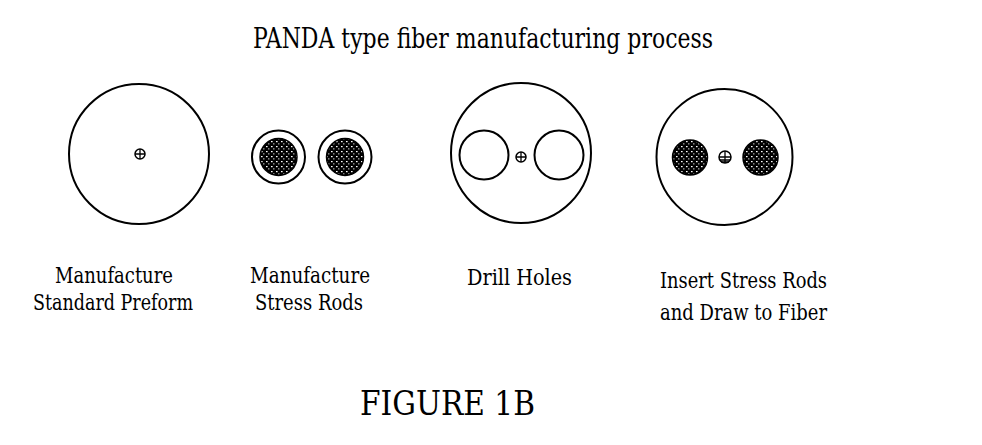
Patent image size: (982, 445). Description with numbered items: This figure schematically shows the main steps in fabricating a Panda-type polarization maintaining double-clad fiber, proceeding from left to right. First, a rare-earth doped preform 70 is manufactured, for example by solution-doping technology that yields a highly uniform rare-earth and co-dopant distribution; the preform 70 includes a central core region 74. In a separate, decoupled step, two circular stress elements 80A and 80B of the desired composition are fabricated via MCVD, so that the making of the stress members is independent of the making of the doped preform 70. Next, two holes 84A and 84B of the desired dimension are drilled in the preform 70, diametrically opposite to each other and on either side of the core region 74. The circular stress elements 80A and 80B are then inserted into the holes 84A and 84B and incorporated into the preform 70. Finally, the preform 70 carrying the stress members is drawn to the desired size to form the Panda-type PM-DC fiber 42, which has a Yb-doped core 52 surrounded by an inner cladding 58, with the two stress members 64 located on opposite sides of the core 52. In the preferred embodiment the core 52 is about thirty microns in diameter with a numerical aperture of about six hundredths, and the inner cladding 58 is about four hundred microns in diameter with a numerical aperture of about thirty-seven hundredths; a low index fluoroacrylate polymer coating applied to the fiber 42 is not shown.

The rare-earth doped preform 70 is at (97, 54).
The core region 74 is at (140, 141).
The circular stress element 80A is at (279, 131).
The circular stress element 80B is at (353, 131).
The hole 84A is at (487, 148).
The hole 84B is at (560, 147).
The Panda-type PM-DC fiber 42 is at (741, 140).
The core 52 is at (728, 151).
The inner cladding 58 is at (747, 190).
The stress members 64 is at (697, 140).